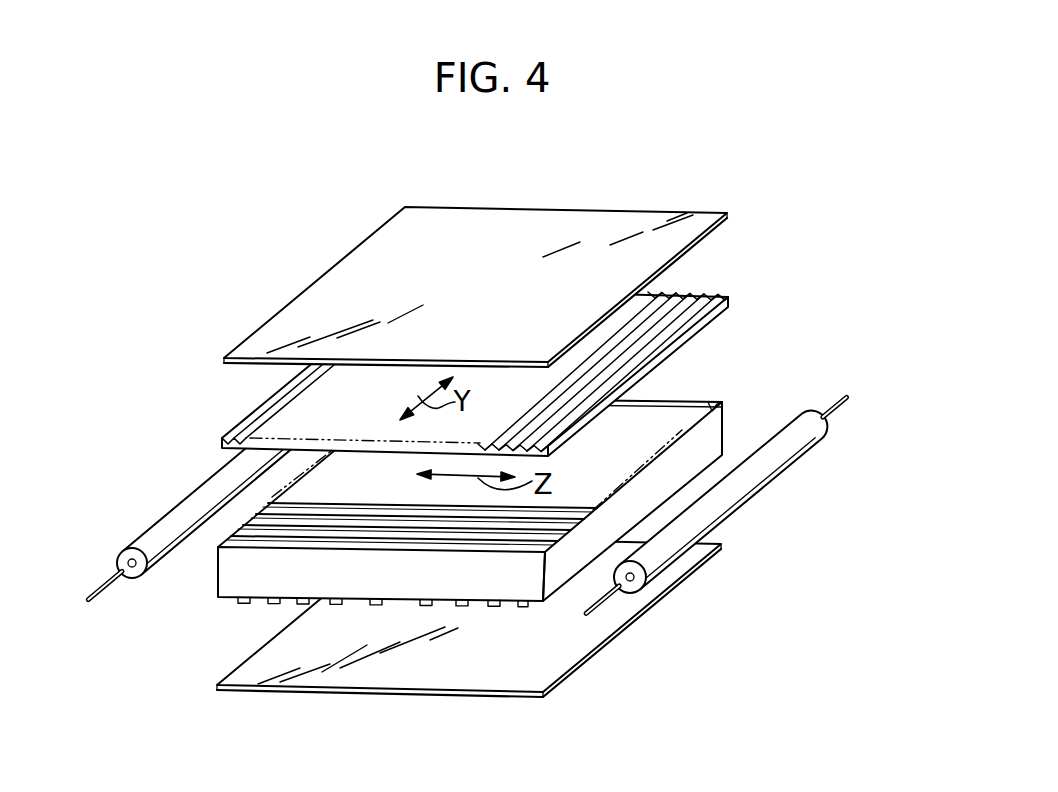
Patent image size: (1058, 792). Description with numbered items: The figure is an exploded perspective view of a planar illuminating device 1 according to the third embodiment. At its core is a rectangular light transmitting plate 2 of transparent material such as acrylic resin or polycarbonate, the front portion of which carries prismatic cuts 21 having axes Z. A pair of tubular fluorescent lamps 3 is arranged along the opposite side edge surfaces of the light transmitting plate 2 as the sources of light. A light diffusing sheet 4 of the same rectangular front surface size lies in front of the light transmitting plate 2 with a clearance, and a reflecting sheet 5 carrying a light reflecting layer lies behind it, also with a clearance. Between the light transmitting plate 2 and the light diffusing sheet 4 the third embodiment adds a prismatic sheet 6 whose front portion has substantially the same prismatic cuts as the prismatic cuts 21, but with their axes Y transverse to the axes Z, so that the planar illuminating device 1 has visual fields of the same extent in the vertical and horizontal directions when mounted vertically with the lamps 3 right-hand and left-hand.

The planar illuminating device 1 is at (796, 326).
The light transmitting plate 2 is at (708, 445).
The prismatic cuts 21 is at (692, 398).
The tubular fluorescent lamps 3 is at (198, 507).
The light diffusing sheet 4 is at (630, 233).
The reflecting sheet 5 is at (562, 653).
The prismatic sheet 6 is at (270, 406).